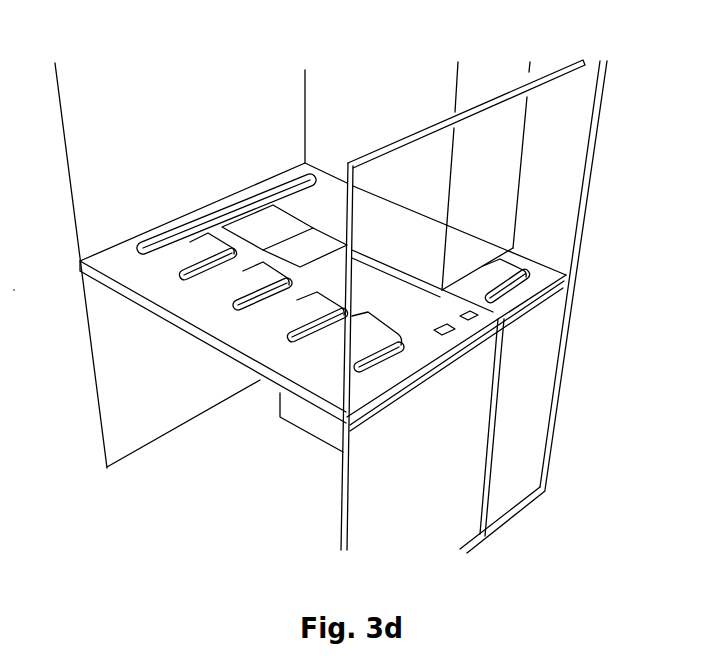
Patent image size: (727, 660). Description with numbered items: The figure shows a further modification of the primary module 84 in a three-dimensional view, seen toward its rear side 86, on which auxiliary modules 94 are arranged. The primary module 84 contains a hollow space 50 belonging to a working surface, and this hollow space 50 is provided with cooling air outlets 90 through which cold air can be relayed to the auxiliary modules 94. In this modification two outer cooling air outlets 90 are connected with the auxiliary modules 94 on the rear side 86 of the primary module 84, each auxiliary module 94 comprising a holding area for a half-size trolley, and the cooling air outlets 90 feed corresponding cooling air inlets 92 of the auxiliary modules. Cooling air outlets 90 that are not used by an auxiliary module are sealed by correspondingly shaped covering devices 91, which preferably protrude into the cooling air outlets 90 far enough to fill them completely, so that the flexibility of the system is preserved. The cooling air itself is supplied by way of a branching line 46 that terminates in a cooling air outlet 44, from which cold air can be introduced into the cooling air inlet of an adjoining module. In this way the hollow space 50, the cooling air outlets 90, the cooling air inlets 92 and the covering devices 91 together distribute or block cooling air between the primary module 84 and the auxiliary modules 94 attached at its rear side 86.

The cooling air outlet 44 is at (193, 210).
The branching line 46 is at (156, 236).
The hollow space 50 is at (292, 278).
The primary module 84 is at (443, 502).
The rear side 86 is at (403, 87).
The cooling air outlets 90 is at (247, 200).
The covering devices 91 is at (302, 231).
The cooling air inlets 92 is at (488, 264).
The auxiliary modules 94 is at (528, 392).